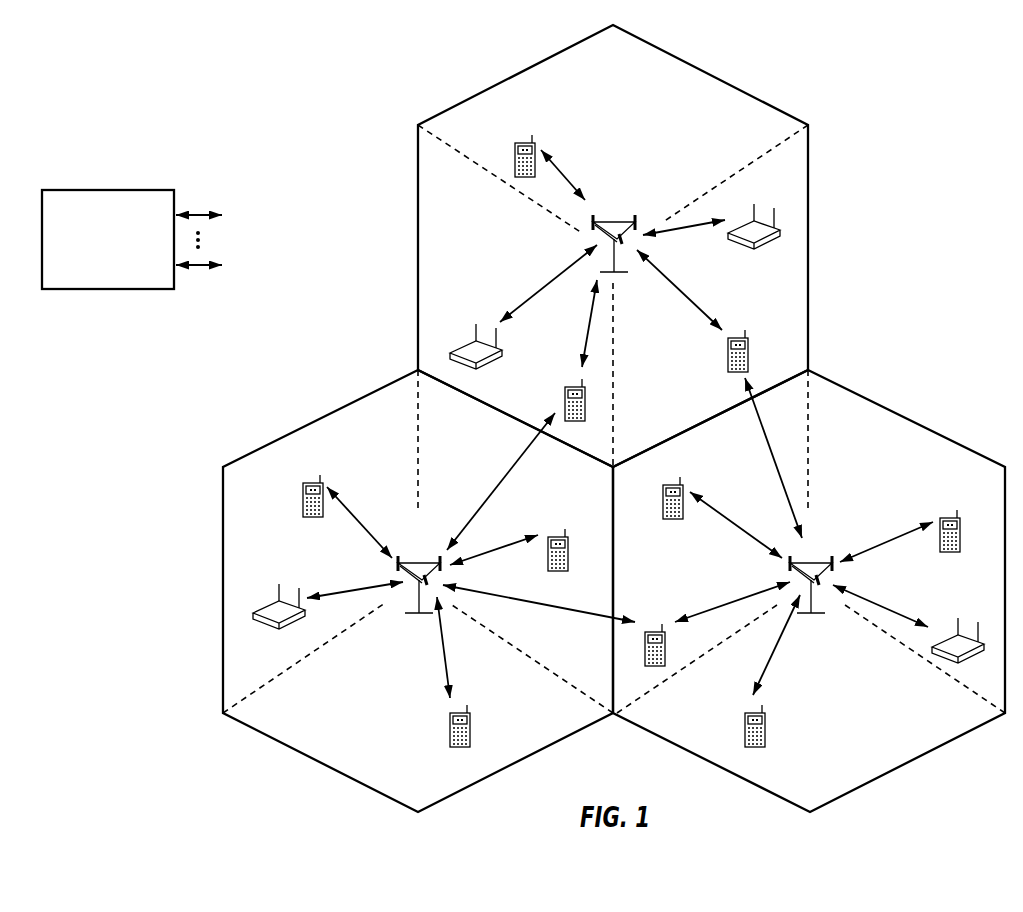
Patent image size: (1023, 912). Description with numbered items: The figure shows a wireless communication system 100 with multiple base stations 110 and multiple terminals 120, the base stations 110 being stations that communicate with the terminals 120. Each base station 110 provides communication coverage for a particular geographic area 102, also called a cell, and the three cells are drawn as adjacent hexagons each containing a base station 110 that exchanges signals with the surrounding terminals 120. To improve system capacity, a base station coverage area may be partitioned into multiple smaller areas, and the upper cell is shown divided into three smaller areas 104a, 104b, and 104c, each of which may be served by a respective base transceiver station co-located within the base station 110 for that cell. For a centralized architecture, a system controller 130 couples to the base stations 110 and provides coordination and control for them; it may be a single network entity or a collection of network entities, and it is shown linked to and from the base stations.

The wireless communication system 100 is at (944, 90).
The geographic area 102 is at (715, 77).
The smaller area 104a is at (634, 81).
The smaller area 104b is at (469, 220).
The smaller area 104c is at (698, 410).
The base station 110 is at (615, 222).
The terminal 120 is at (515, 148).
The system controller 130 is at (102, 190).